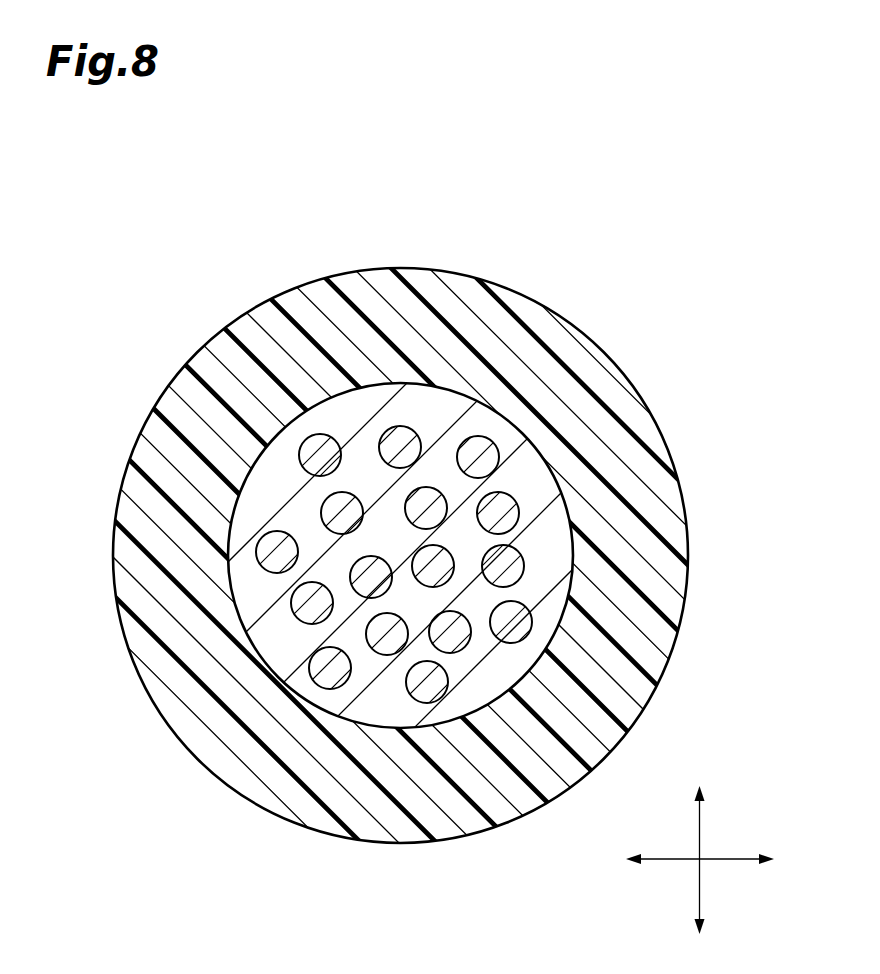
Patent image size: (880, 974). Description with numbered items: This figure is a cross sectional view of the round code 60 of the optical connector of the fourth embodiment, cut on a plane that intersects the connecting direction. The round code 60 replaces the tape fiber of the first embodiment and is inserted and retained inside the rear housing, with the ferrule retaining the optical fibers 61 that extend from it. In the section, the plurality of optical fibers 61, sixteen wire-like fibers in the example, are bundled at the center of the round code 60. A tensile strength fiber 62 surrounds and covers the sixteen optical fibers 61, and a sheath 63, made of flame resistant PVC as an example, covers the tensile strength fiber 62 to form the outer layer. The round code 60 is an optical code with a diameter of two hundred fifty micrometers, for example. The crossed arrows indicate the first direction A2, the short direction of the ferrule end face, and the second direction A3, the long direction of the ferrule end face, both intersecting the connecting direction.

The round code 60 is at (517, 293).
The optical fibers 61 is at (492, 443).
The tensile strength fiber 62 is at (560, 548).
The sheath 63 is at (650, 663).
The first direction A2 is at (700, 829).
The second direction A3 is at (666, 860).